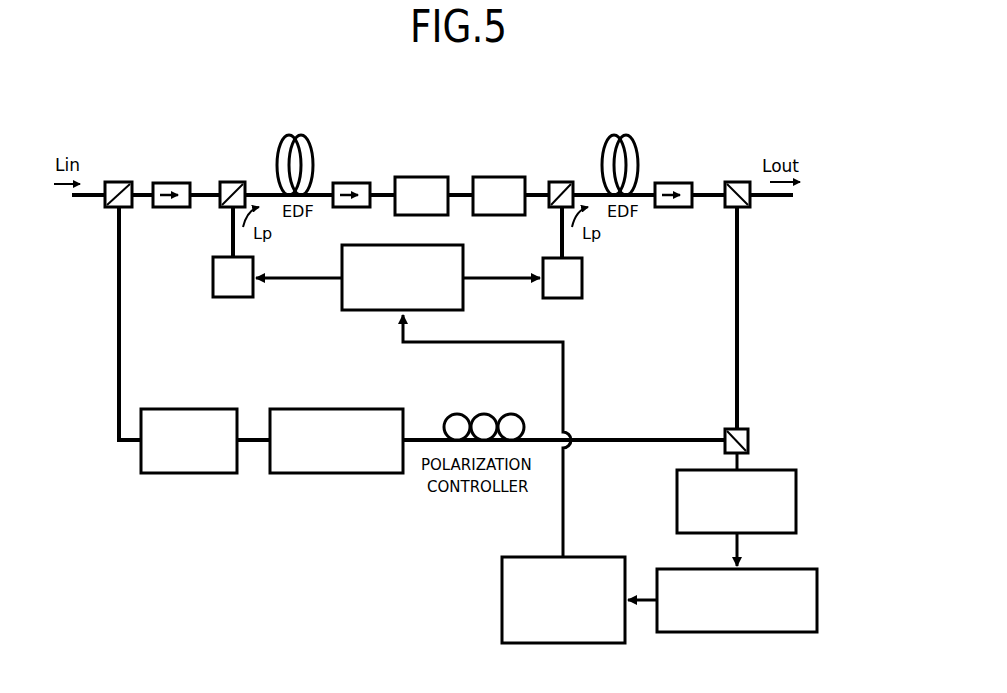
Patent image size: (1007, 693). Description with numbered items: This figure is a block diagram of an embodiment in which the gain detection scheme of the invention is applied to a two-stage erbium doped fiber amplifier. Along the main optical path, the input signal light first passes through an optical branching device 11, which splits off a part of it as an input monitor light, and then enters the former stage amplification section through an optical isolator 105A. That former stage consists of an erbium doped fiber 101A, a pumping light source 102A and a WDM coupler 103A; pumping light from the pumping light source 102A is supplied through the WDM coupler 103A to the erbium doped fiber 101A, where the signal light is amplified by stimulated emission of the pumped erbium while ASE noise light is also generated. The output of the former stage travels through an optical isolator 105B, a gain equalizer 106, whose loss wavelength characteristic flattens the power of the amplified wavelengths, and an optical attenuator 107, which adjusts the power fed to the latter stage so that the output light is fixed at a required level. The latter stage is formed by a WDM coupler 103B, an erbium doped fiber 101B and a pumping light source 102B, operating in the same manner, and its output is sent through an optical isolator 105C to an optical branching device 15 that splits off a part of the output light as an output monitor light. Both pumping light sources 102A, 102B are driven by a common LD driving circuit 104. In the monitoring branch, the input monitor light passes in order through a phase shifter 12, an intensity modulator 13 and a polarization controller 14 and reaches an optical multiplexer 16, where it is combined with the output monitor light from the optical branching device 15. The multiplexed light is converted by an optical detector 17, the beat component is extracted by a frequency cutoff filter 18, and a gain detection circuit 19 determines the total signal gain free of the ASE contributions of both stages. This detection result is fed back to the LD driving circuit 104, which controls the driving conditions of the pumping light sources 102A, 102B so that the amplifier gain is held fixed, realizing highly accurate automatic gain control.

The optical branching device 11 is at (128, 182).
The phase shifter 12 is at (196, 409).
The intensity modulator 13 is at (341, 409).
The polarization controller 14 is at (471, 417).
The optical branching device 15 is at (742, 182).
The optical multiplexer 16 is at (748, 440).
The optical detector 17 is at (796, 503).
The frequency cutoff filter 18 is at (817, 589).
The gain detection circuit 19 is at (584, 557).
The erbium doped fiber 101A is at (295, 137).
The erbium doped fiber 101B is at (626, 136).
The pumping light source 102A is at (213, 270).
The pumping light source 102B is at (582, 275).
The WDM coupler 103A is at (238, 182).
The WDM coupler 103B is at (566, 182).
The LD driving circuit 104 is at (463, 266).
The optical isolator 105A is at (180, 183).
The optical isolator 105B is at (358, 183).
The optical isolator 105C is at (680, 183).
The gain equalizer 106 is at (420, 177).
The optical attenuator 107 is at (502, 177).